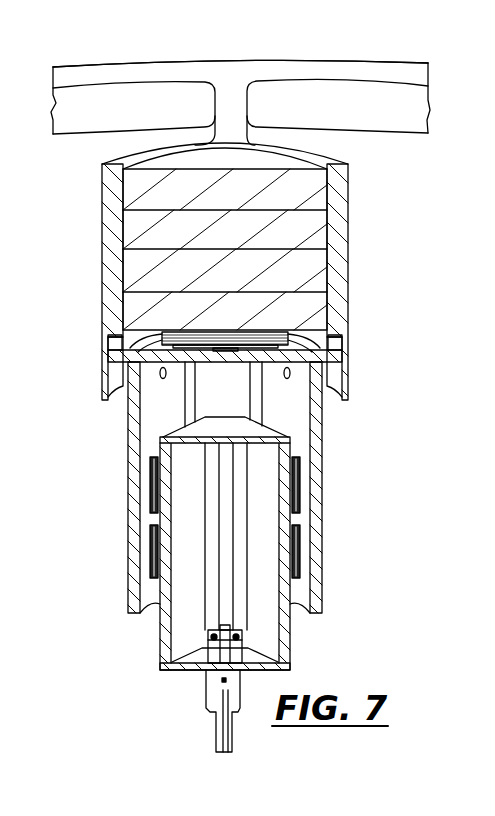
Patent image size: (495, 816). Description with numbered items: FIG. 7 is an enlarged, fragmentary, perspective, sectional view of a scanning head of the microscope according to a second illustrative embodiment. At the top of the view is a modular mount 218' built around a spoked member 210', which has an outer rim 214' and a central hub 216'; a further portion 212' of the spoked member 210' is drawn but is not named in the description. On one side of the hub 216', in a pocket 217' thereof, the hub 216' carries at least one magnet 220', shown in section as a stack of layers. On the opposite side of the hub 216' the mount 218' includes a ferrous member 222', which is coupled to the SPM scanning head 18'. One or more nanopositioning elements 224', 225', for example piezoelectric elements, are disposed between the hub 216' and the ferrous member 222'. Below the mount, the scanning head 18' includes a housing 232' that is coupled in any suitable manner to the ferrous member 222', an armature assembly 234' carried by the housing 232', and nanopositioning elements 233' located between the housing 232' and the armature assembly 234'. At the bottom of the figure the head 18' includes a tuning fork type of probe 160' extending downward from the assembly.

The spoked member 210' is at (242, 87).
The rib 212' is at (249, 117).
The rim 214' is at (240, 48).
The hub 216' is at (255, 157).
The pocket 217' is at (275, 321).
The modular mount 218' is at (281, 282).
The magnet 220' is at (185, 249).
The ferrous member 222' is at (206, 474).
The nanopositioning element 224' is at (289, 342).
The nanopositioning element 225' is at (309, 361).
The SPM scanning head 18' is at (285, 413).
The housing 232' is at (266, 553).
The nanopositioning elements 233' is at (226, 517).
The armature assembly 234' is at (274, 648).
The tuning fork type probe 160' is at (185, 711).